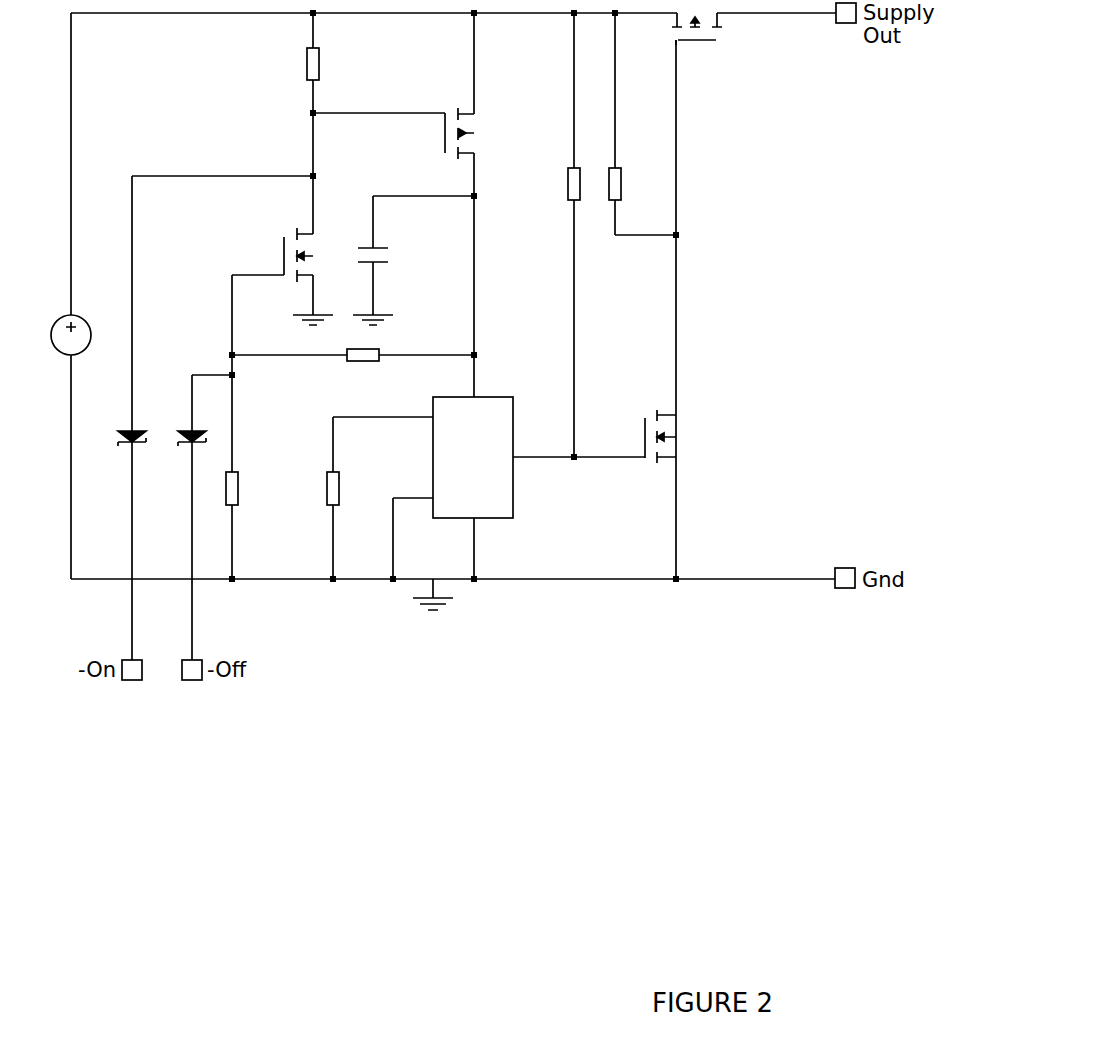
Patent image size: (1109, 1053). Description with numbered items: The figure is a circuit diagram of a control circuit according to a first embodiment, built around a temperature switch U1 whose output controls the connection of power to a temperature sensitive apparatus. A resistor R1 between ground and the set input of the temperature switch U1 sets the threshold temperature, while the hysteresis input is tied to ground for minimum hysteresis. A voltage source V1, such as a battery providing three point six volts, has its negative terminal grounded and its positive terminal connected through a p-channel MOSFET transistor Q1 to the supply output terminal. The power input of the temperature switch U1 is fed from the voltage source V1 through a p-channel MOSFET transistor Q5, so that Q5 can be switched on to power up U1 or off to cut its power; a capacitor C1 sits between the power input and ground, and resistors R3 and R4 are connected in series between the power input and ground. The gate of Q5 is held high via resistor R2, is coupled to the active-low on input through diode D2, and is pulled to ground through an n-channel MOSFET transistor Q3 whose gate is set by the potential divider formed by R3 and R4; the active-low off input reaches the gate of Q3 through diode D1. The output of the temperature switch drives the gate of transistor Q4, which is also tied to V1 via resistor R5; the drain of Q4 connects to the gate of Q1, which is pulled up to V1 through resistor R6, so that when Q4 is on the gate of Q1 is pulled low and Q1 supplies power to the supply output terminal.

The voltage source V1 is at (72, 322).
The resistor R1 is at (319, 479).
The resistor R2 is at (329, 59).
The resistor R3 is at (361, 369).
The resistor R4 is at (248, 483).
The resistor R5 is at (558, 184).
The resistor R6 is at (631, 184).
The capacitor C1 is at (388, 256).
The diode D1 is at (202, 424).
The diode D2 is at (142, 424).
The p-channel MOSFET transistor Q1 is at (683, 30).
The n-channel MOSFET transistor Q3 is at (281, 255).
The transistor Q4 is at (656, 449).
The p-channel MOSFET transistor Q5 is at (453, 147).
The temperature switch U1 is at (496, 459).